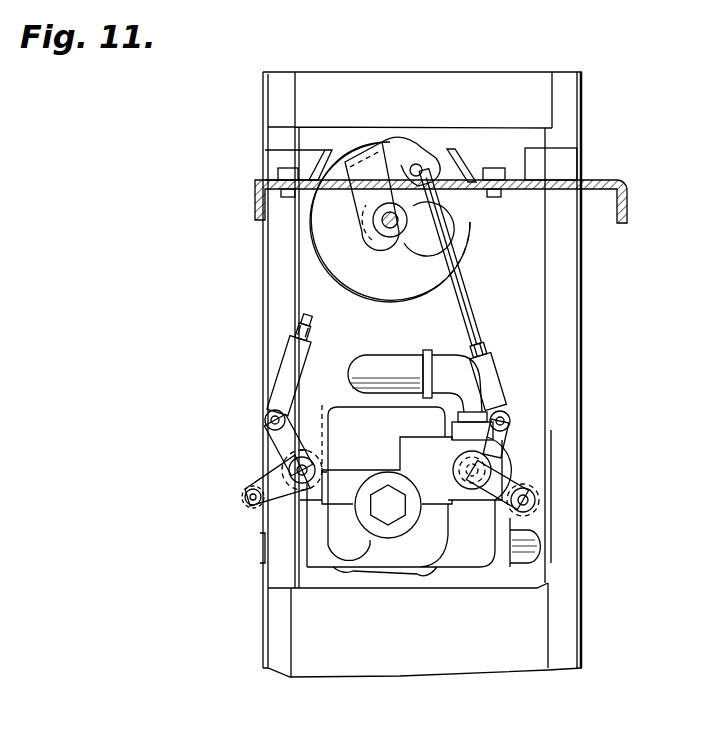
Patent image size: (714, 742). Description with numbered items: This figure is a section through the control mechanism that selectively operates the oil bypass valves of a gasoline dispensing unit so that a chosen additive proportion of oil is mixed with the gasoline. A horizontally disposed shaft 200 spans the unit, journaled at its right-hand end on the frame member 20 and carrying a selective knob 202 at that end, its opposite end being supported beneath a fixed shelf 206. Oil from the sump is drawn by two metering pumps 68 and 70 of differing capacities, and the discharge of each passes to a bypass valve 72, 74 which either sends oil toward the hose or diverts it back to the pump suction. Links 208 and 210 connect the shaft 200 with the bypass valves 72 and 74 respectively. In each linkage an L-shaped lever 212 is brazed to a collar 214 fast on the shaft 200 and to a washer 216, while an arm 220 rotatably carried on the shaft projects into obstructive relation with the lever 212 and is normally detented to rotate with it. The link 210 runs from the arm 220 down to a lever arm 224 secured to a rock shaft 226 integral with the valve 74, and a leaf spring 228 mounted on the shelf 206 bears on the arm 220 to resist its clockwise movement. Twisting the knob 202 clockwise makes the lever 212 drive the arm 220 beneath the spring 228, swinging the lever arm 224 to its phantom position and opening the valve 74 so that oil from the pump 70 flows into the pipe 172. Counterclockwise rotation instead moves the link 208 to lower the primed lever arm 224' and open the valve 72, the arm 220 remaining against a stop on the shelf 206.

The frame member 20 is at (441, 71).
The metering pump 68 is at (226, 518).
The metering pump 70 is at (395, 610).
The bypass valve 72 is at (322, 420).
The bypass valve 74 is at (500, 540).
The pipe 172 is at (377, 357).
The shaft 200 is at (382, 242).
The selective knob 202 is at (473, 246).
The fixed shelf 206 is at (530, 181).
The link 208 is at (313, 328).
The link 210 is at (466, 296).
The L-shaped lever 212 is at (344, 181).
The collar 214 is at (384, 203).
The washer 216 is at (400, 252).
The arm 220 is at (425, 157).
The lever arm 224 is at (521, 463).
The lever arm 224' is at (244, 455).
The rock shaft 226 is at (472, 489).
The leaf spring 228 is at (447, 148).